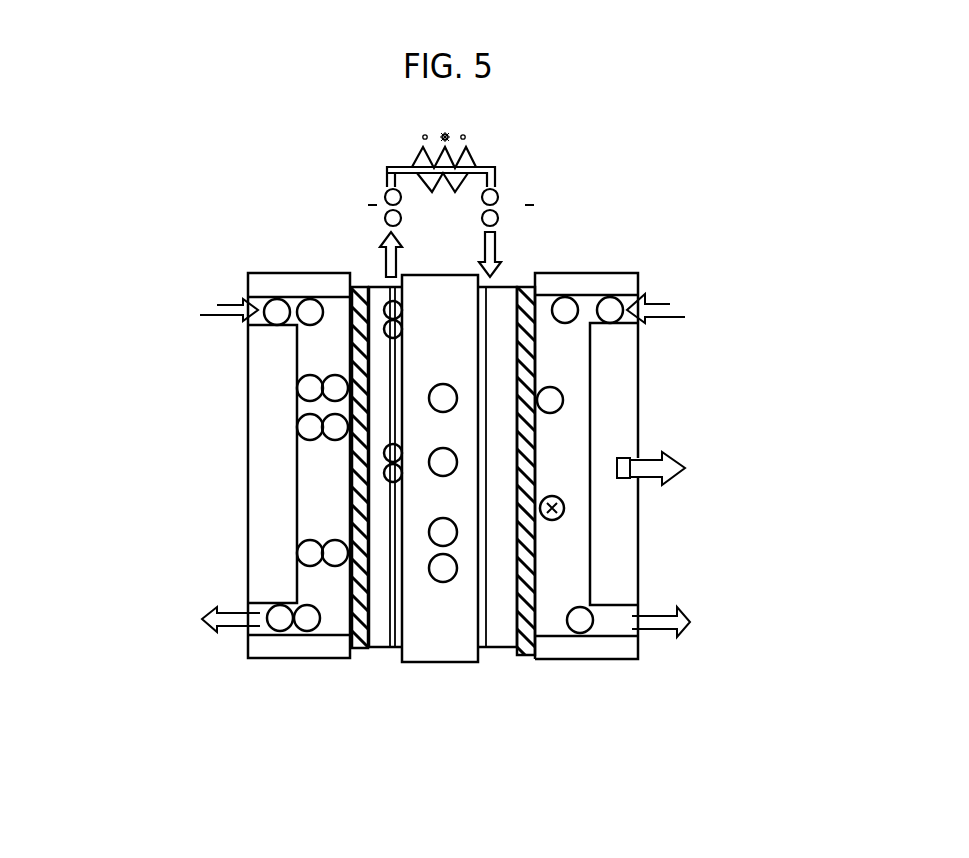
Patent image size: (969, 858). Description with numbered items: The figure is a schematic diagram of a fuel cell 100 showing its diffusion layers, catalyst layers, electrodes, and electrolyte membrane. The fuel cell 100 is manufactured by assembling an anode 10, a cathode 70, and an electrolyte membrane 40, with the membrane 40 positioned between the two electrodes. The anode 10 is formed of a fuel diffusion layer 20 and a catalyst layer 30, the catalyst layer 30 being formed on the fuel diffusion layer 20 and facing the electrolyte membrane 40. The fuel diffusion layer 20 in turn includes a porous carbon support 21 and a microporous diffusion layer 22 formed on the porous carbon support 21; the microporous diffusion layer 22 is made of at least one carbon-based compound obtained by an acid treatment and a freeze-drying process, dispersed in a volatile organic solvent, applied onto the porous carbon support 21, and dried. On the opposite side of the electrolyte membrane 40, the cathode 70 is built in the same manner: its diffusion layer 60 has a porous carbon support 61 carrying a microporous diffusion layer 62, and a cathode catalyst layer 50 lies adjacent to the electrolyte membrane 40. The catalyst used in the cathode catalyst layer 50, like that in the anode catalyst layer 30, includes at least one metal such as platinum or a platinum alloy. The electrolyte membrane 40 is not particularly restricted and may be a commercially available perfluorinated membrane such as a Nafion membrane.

The fuel cell 100 is at (223, 227).
The anode 10 is at (118, 702).
The fuel diffusion layer 20 is at (190, 677).
The porous carbon support 21 is at (359, 648).
The microporous diffusion layer 22 is at (378, 648).
The catalyst layer 30 is at (397, 660).
The electrolyte membrane 40 is at (432, 618).
The cathode catalyst layer 50 is at (483, 658).
The cathode diffusion layer 60 is at (700, 677).
The porous carbon support 61 is at (525, 648).
The microporous diffusion layer 62 is at (502, 648).
The cathode 70 is at (762, 707).